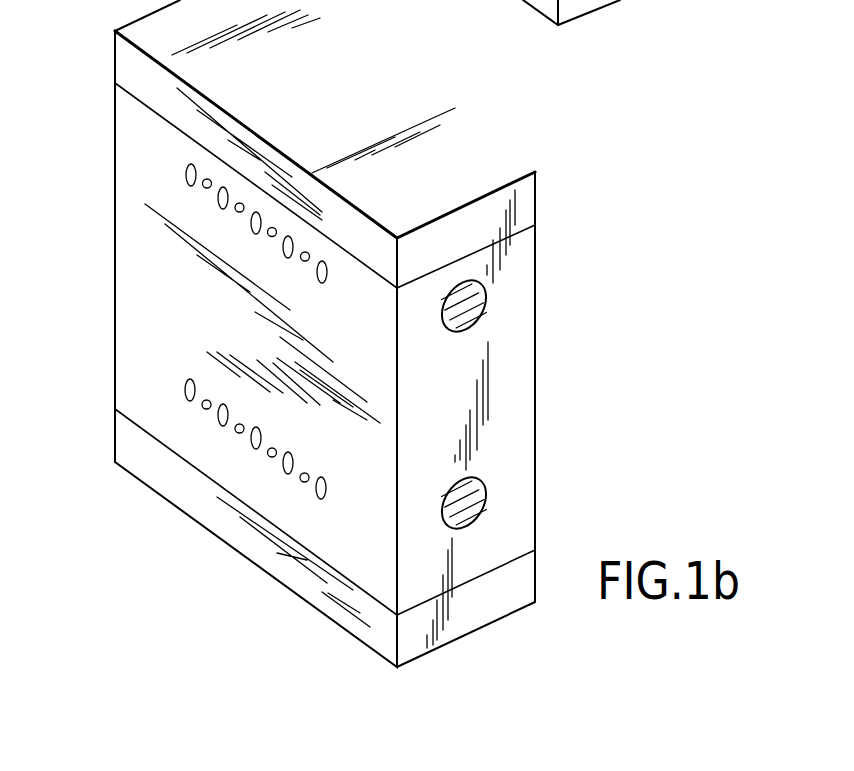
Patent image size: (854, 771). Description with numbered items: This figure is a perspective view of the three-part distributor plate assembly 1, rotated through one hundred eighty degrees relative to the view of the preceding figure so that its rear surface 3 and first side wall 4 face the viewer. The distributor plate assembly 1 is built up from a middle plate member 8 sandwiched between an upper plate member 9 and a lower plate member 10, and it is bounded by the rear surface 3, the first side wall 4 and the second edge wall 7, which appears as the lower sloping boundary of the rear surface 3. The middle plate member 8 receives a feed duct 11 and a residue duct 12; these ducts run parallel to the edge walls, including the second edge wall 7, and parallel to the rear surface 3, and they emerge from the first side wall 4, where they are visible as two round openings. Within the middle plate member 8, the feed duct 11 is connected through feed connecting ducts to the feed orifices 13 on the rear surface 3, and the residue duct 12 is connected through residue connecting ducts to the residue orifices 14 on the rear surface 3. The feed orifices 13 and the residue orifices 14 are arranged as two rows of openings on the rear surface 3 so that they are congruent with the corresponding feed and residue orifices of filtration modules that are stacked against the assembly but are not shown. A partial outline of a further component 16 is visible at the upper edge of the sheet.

The distributor plate assembly 1 is at (573, 182).
The rear surface 3 is at (125, 263).
The first side wall 4 is at (525, 379).
The second edge wall 7 is at (227, 547).
The middle plate member 8 is at (536, 452).
The upper plate member 9 is at (437, 93).
The lower plate member 10 is at (505, 617).
The feed duct 11 is at (485, 500).
The residue duct 12 is at (485, 290).
The feed orifices 13 is at (185, 388).
The residue orifices 14 is at (183, 167).
The second block 16 is at (650, 2).